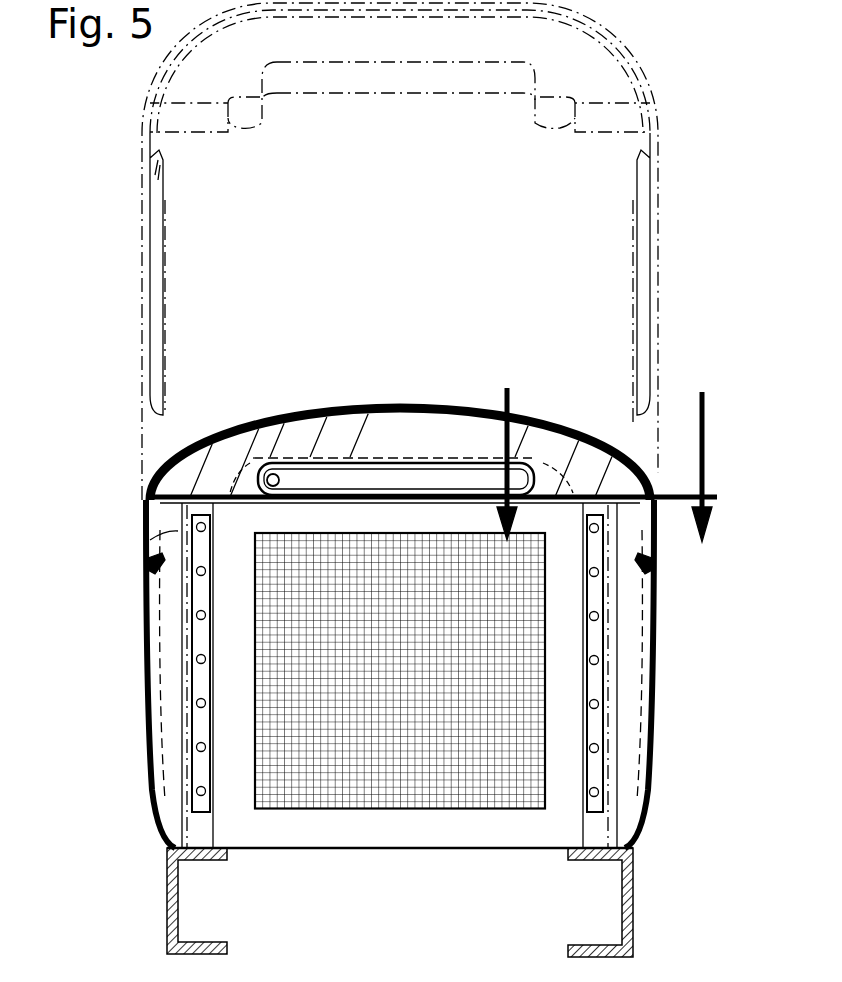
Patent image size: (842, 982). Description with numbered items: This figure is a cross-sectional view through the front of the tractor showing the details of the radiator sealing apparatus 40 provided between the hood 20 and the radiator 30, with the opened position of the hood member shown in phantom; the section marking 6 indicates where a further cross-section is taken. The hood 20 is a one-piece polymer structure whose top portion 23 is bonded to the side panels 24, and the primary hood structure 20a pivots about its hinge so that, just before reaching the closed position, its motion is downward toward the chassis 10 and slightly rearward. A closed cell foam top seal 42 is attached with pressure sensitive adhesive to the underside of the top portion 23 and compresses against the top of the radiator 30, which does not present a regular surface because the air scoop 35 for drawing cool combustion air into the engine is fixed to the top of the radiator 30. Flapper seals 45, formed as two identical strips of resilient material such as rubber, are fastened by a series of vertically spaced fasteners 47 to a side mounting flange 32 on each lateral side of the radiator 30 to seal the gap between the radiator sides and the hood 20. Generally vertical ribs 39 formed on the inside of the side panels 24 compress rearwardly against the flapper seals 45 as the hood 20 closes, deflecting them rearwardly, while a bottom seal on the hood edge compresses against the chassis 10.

The tractor chassis 10 is at (167, 884).
The hood 20 is at (662, 100).
The primary hood structure 20a is at (140, 192).
The top portion 23 is at (345, 405).
The side panels 24 is at (147, 700).
The radiator 30 is at (235, 737).
The side mounting flange 32 is at (187, 613).
The air scoop 35 is at (272, 486).
The ribs 39 is at (147, 526).
The sealing apparatus 40 is at (132, 447).
The top seal 42 is at (445, 90).
The flapper seals 45 is at (190, 637).
The fasteners 47 is at (199, 791).
The section line 6- 6 is at (437, 452).